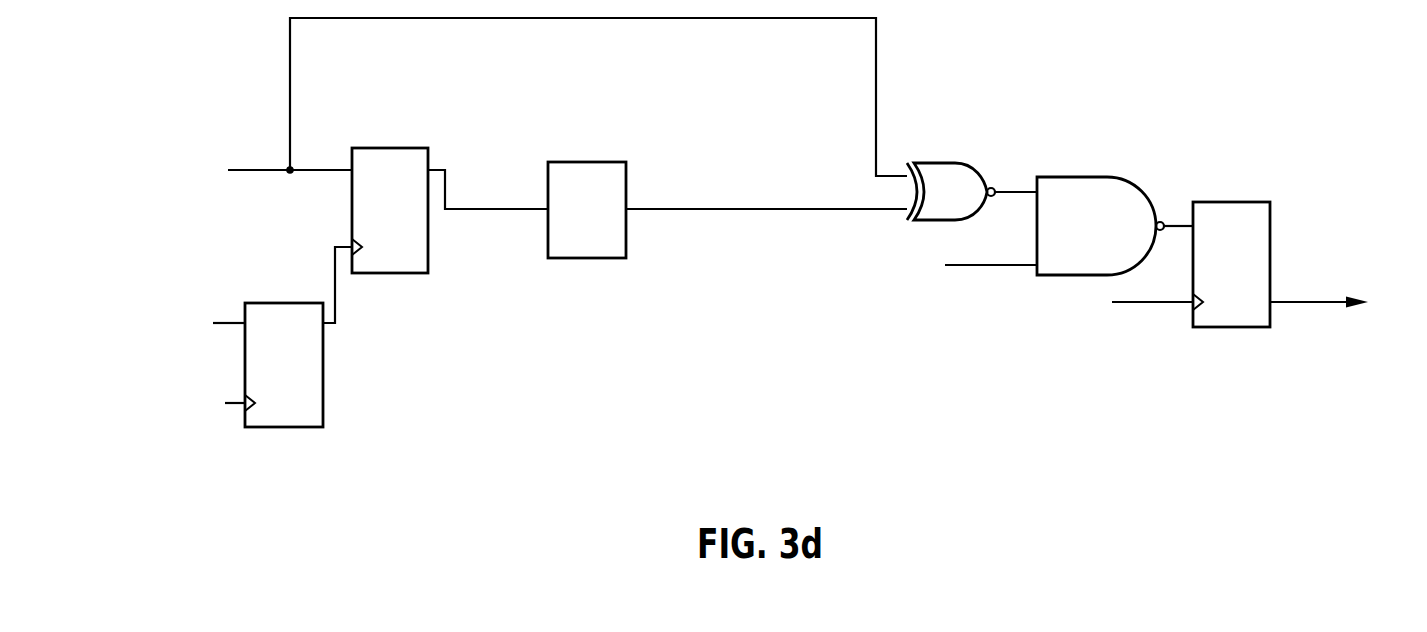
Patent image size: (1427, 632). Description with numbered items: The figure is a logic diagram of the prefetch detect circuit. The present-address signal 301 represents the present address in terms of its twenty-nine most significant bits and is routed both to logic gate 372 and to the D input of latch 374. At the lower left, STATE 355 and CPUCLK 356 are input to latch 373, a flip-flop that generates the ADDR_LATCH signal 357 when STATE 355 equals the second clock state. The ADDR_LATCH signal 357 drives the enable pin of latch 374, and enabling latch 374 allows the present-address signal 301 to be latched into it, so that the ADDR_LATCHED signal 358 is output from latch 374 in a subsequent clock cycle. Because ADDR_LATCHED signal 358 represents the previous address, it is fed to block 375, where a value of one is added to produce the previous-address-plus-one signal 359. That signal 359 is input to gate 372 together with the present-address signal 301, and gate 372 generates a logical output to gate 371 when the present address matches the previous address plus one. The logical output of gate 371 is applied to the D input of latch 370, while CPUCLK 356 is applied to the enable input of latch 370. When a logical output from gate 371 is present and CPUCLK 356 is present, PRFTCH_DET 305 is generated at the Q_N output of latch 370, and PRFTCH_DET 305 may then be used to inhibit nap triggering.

The ADDR[31:3] signal 301 is at (263, 169).
The PRFTCH_DET signal 305 is at (1315, 302).
The STATE signal 355 is at (222, 327).
The CPUCLK signal 356 is at (225, 405).
The ADDR_LATCH signal 357 is at (350, 246).
The ADDR_LATCHED signal 358 is at (540, 208).
The PREV_ADDR[31:3]+1 signal 359 is at (670, 211).
The latch 370 is at (1228, 202).
The gate 371 is at (1073, 177).
The logic gate 372 is at (928, 163).
The latch 373 is at (300, 427).
The latch 374 is at (393, 273).
The block 375 is at (600, 258).